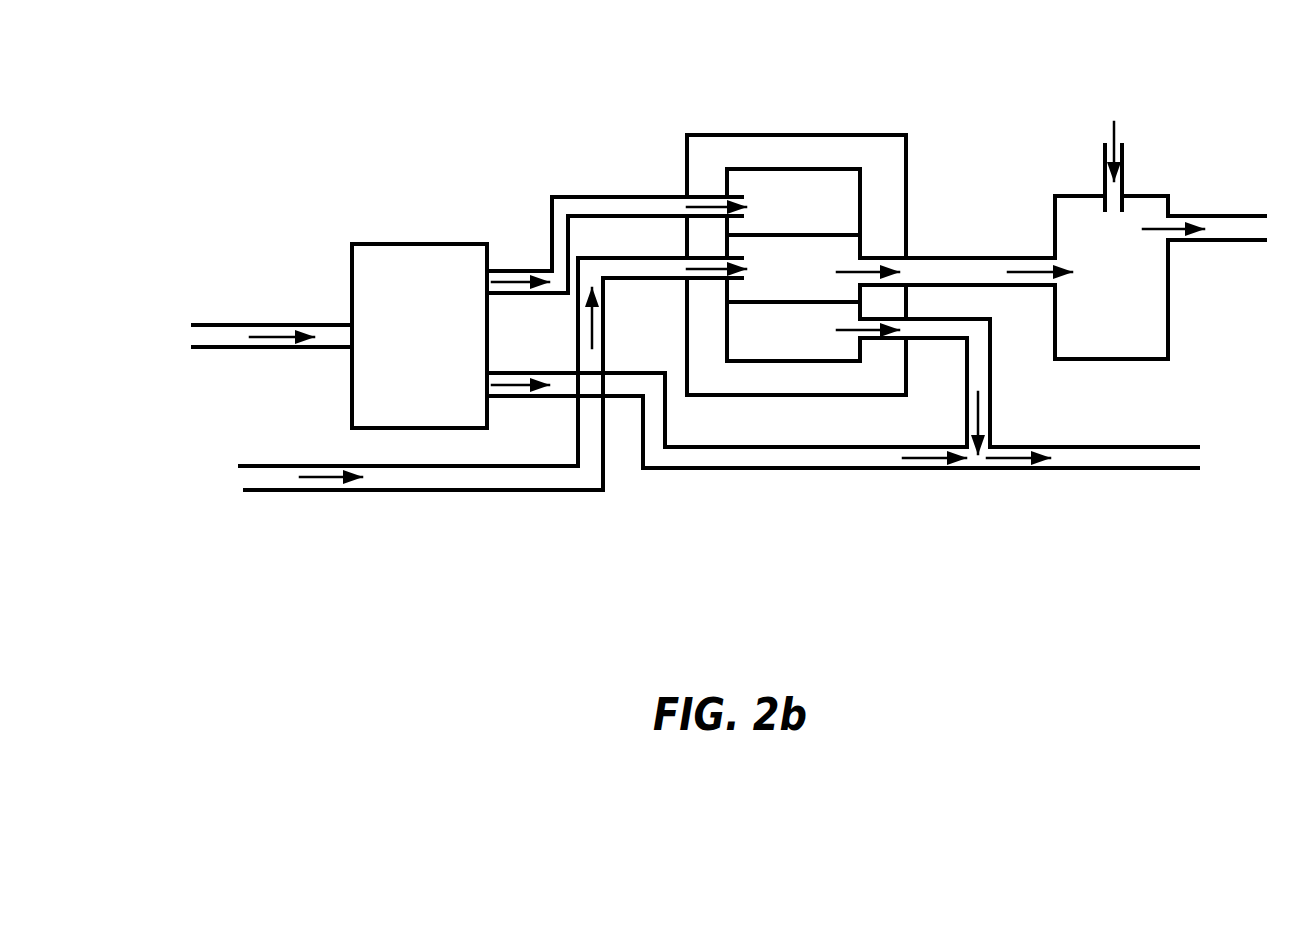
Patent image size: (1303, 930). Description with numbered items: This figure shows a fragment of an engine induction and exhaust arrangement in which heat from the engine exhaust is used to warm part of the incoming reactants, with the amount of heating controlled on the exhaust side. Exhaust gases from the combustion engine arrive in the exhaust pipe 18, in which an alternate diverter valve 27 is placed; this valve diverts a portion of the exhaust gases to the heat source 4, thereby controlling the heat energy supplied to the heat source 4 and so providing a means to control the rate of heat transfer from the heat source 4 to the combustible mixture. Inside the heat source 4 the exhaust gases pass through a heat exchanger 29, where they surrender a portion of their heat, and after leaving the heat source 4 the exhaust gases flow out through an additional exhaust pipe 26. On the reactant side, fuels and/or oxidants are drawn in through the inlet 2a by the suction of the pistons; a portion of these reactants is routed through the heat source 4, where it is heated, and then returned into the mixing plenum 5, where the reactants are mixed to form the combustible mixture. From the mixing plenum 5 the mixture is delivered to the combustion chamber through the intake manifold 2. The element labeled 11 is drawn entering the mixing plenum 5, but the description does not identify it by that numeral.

The exhaust pipe 18 is at (282, 317).
The alternate diverter valve 27 is at (345, 395).
The inlet 2a is at (425, 500).
The additional exhaust pipe 26 is at (1115, 478).
The heat source 4 is at (850, 122).
The heat exchanger 29 is at (762, 165).
The mixing plenum 5 is at (1111, 277).
The vessel inlet 11 is at (1132, 170).
The intake manifold 2 is at (1223, 246).